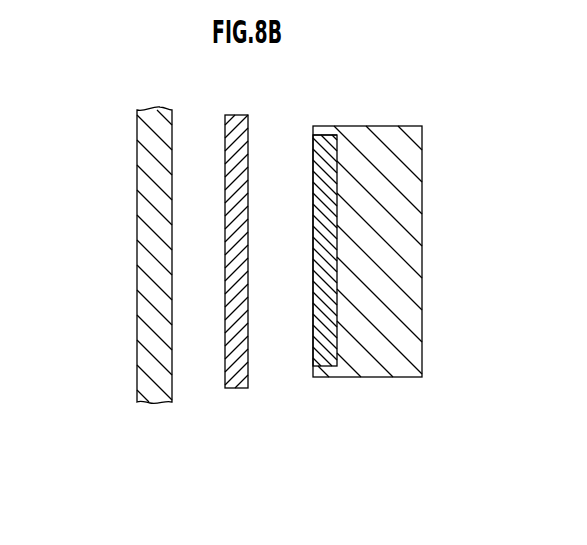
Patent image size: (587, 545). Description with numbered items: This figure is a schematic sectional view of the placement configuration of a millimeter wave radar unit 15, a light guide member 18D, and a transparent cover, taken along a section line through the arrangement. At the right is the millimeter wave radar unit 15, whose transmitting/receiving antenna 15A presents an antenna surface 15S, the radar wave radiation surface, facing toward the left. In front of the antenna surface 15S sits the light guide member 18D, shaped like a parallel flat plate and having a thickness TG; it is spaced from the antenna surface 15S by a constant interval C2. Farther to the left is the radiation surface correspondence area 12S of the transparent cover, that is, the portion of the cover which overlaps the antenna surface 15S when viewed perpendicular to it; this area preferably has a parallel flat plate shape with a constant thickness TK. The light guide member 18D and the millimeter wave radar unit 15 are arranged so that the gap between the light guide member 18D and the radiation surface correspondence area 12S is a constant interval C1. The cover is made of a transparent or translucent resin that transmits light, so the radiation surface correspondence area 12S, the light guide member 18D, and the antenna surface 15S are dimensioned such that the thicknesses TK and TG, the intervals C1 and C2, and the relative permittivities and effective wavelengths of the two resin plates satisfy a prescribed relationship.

The radiation surface correspondence area 12S is at (137, 118).
The light guide member 18D is at (241, 115).
The millimeter wave radar unit 15 is at (390, 126).
The antenna surface 15S is at (313, 153).
The transmitting/receiving antenna 15A is at (319, 135).
The interval between the radiation surface correspondence area and the light guide m C1 is at (225, 343).
The interval between the light guide member and the antenna surface C2 is at (313, 344).
The thickness of the radiation surface correspondence area TK is at (203, 443).
The thickness of the light guide member TG is at (226, 390).